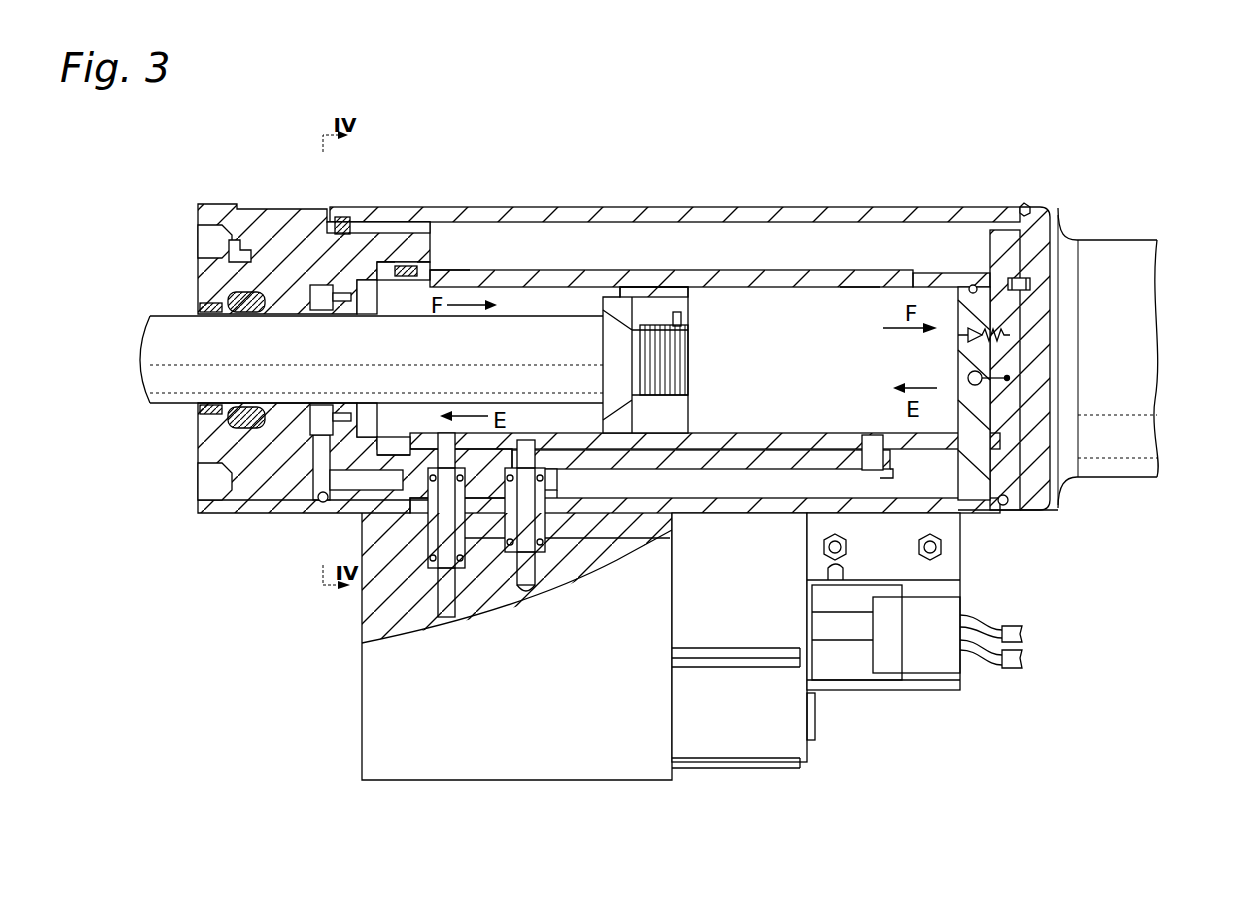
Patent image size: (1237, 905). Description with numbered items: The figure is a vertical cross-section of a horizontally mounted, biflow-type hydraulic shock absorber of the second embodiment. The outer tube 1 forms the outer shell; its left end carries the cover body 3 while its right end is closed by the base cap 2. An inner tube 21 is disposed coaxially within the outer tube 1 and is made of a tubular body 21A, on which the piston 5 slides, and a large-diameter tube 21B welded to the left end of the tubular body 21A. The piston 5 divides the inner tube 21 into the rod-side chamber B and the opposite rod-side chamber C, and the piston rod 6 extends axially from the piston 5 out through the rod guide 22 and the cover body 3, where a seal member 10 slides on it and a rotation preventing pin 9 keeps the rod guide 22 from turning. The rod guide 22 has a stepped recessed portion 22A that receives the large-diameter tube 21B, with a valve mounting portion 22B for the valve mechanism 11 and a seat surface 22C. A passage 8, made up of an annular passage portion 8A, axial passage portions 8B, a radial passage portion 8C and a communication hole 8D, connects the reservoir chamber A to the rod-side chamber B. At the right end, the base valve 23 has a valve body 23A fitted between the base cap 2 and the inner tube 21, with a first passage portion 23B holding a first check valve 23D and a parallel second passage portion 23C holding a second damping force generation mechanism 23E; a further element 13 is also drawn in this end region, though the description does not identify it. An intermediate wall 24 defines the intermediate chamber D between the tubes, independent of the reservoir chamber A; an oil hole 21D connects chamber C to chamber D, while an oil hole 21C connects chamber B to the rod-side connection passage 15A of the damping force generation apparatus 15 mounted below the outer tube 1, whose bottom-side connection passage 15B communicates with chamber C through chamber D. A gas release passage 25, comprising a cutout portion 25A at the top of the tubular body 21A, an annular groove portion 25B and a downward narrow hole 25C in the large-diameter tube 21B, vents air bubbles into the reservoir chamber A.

The outer tube 1 is at (905, 212).
The base cap 2 is at (1045, 310).
The cover body 3 is at (200, 250).
The piston 5 is at (650, 298).
The piston rod 6 is at (172, 385).
The passage 8 is at (310, 425).
The annular passage portion 8A is at (300, 250).
The axial passage portions 8B is at (320, 285).
The radial passage portion 8C is at (318, 462).
The communication hole 8D is at (335, 480).
The rotation preventing pin 9 is at (343, 222).
The seal member 10 is at (222, 300).
The valve mechanism 11 is at (363, 280).
The fixing bolt 13 is at (1028, 300).
The damping force generation apparatus 15 is at (828, 732).
The rod-side connection passage 15A is at (400, 600).
The bottom-side connection passage 15B is at (545, 582).
The inner tube 21 is at (731, 258).
The tubular body 21A is at (853, 282).
The large-diameter tube 21B is at (425, 272).
The oil hole 21C is at (410, 560).
The oil hole 21D is at (866, 442).
The rod guide 22 is at (290, 235).
The recessed portion 22A is at (372, 262).
The valve mounting portion 22B is at (372, 542).
The seat surface 22C is at (378, 505).
The base valve 23 is at (1055, 487).
The valve body 23A is at (1027, 205).
The first passage portion 23B is at (985, 393).
The second passage portion 23C is at (1005, 340).
The first check valve 23D is at (1006, 494).
The second damping force generation mechanism 23E is at (961, 240).
The intermediate wall 24 is at (817, 562).
The gas release passage 25 is at (455, 275).
The cutout portion 25A is at (395, 268).
The annular groove portion 25B is at (440, 272).
The narrow hole 25C is at (395, 510).
The reservoir chamber A is at (785, 245).
The rod-side chamber B is at (557, 285).
The opposite rod-side chamber C is at (823, 320).
The intermediate chamber D is at (735, 470).